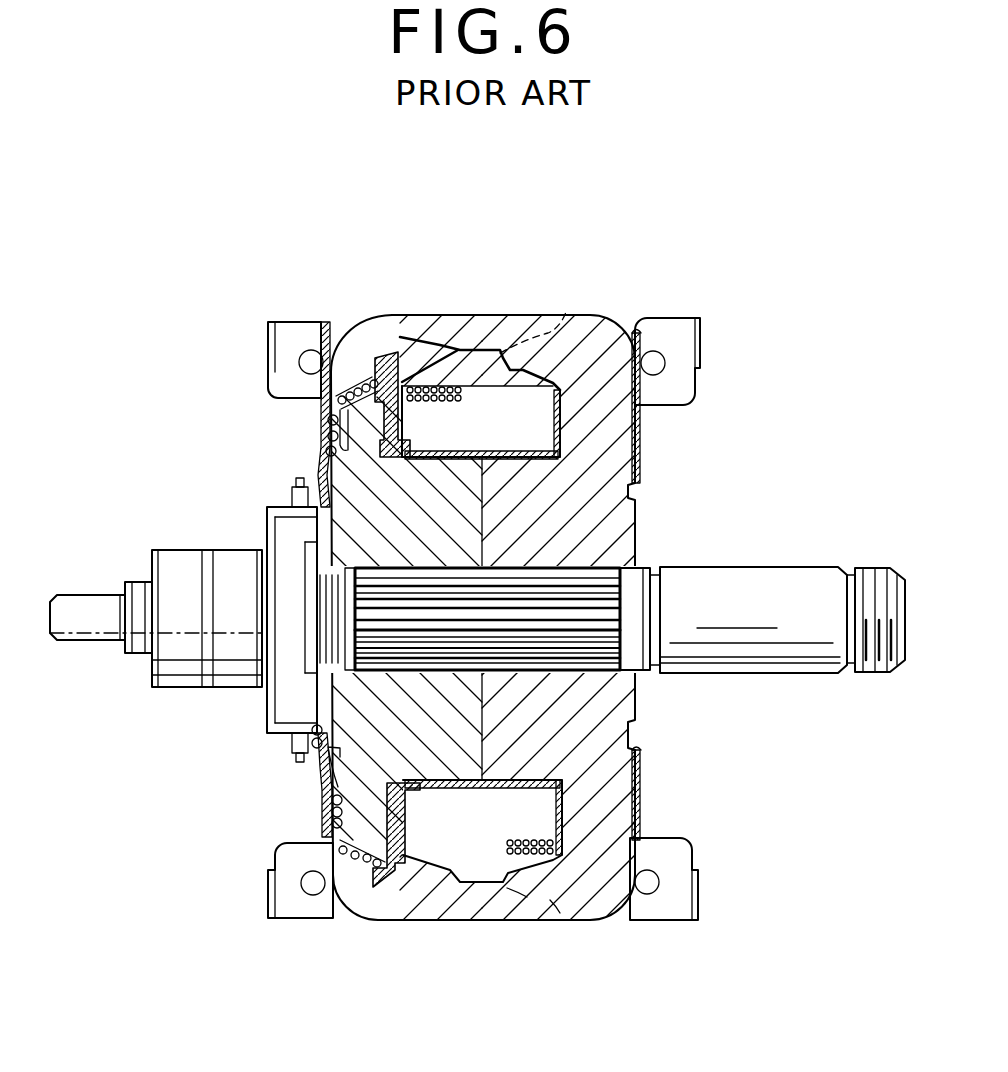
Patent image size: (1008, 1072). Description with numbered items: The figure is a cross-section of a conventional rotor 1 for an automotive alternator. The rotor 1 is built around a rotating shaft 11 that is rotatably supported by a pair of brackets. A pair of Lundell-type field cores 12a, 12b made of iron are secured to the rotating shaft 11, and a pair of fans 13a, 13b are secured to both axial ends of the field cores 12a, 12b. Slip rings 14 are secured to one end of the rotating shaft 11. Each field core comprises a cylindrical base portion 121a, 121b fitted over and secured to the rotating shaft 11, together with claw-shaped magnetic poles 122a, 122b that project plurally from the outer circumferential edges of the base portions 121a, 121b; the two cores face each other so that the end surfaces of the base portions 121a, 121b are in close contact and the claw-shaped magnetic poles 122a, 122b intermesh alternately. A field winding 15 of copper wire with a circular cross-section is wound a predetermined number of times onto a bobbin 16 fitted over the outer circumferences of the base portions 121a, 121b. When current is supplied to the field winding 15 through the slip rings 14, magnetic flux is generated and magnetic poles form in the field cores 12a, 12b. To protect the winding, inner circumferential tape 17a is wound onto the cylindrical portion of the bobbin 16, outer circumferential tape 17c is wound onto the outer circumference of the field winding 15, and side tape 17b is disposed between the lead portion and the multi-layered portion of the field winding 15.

The rotor 1 is at (777, 251).
The rotating shaft 11 is at (780, 583).
The field core 12a is at (368, 418).
The field core 12b is at (612, 315).
The fan 13a is at (290, 352).
The fan 13b is at (682, 345).
The slip rings 14 is at (232, 567).
The field winding 15 is at (473, 398).
The bobbin 16 is at (372, 330).
The inner circumferential tape 17a is at (557, 437).
The side tape 17b is at (330, 457).
The outer circumferential tape 17c is at (530, 385).
The cylindrical base portion 121a is at (380, 750).
The cylindrical base portion 121b is at (560, 520).
The claw-shaped magnetic poles 122a is at (378, 335).
The claw-shaped magnetic poles 122b is at (443, 318).